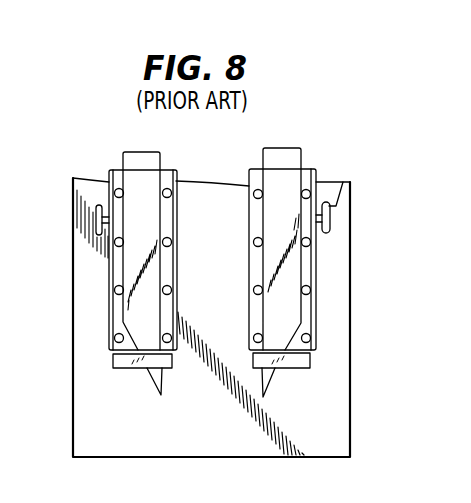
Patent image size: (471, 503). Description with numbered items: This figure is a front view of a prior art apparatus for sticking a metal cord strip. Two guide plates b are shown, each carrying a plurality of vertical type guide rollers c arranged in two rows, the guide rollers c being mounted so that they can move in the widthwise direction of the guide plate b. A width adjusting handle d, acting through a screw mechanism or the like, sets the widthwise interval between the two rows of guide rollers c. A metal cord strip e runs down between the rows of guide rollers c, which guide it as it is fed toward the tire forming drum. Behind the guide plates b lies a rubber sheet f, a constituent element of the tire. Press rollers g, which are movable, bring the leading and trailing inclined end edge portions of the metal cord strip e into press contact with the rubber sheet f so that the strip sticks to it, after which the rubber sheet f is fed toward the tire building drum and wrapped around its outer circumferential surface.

The metal cord strip e is at (283, 160).
The guide plate b is at (316, 178).
The width adjusting handle d is at (342, 182).
The guide roller c is at (311, 242).
The press roller g is at (292, 372).
The rubber sheet f is at (345, 404).